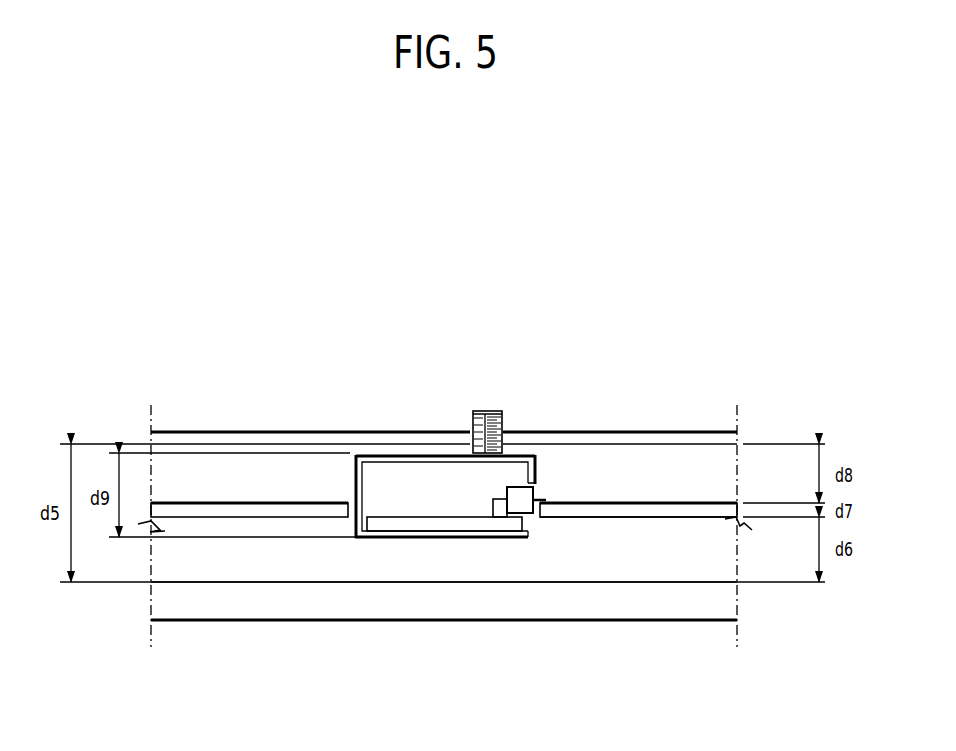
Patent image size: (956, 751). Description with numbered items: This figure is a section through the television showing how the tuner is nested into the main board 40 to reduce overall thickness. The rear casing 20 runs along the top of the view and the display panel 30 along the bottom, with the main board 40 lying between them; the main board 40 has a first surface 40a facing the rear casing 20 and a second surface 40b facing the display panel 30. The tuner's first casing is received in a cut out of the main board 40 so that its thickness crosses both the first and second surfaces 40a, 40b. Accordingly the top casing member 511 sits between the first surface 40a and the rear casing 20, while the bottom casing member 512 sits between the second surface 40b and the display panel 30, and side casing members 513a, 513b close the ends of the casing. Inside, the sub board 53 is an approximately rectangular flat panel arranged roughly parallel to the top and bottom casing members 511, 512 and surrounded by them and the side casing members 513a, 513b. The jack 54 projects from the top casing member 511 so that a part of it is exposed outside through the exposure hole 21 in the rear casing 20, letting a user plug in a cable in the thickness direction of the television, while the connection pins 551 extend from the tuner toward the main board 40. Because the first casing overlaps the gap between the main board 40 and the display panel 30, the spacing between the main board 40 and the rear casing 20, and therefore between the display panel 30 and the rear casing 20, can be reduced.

The rear casing 20 is at (697, 437).
The exposure hole 21 is at (504, 434).
The display panel 30 is at (230, 612).
The main board 40 is at (303, 512).
The first surface 40a is at (595, 505).
The second surface 40b is at (687, 517).
The sub board 53 is at (426, 522).
The jack 54 is at (485, 410).
The top casing member 511 is at (366, 456).
The bottom casing member 512 is at (380, 538).
The side casing member 513a is at (357, 482).
The side casing member 513b is at (534, 470).
The connection pins 551 is at (547, 500).